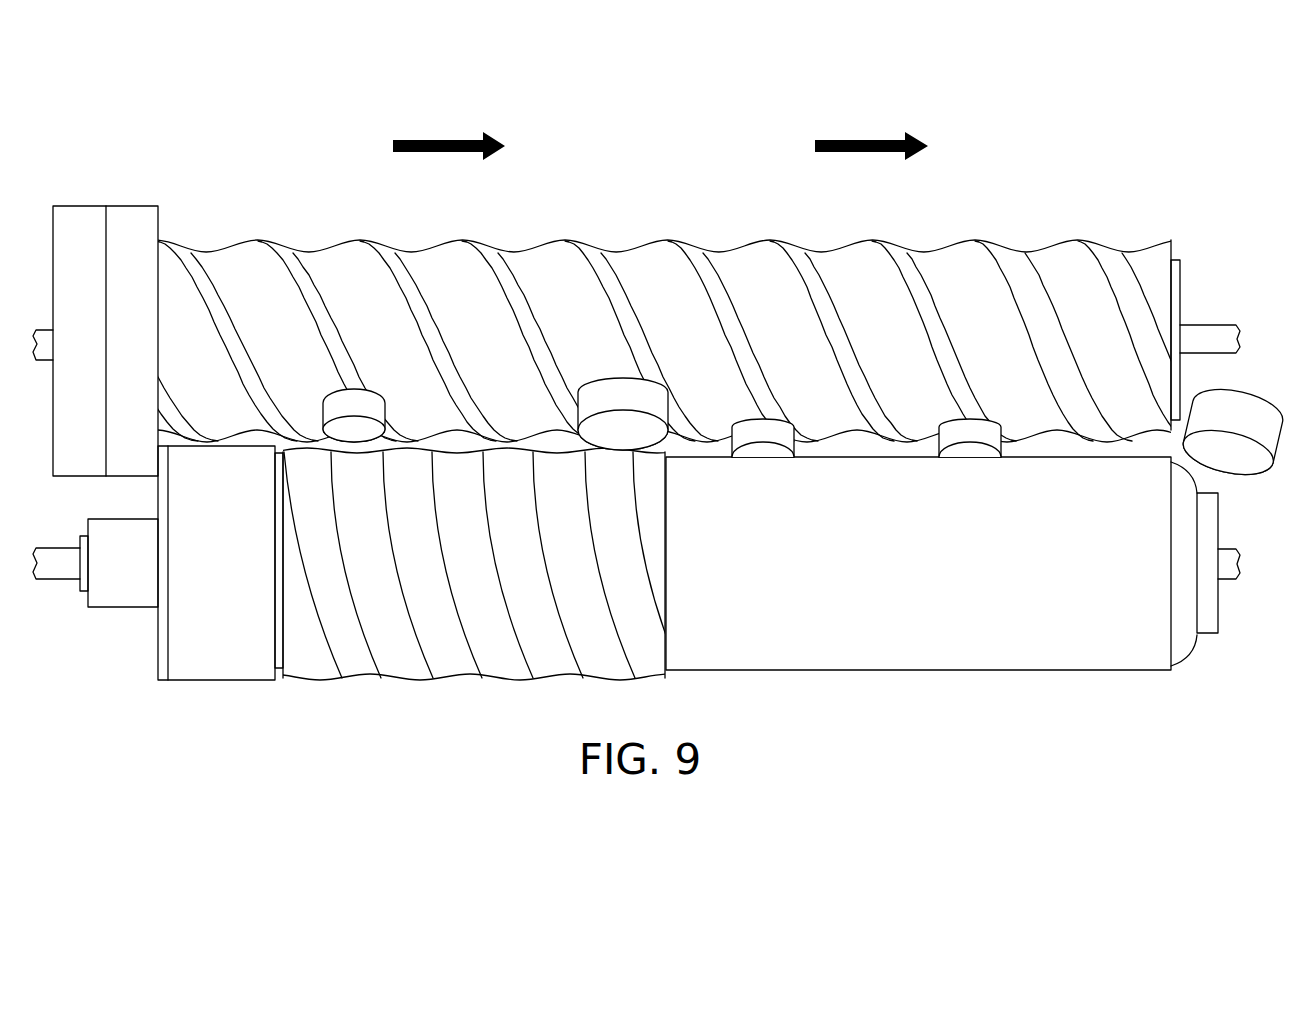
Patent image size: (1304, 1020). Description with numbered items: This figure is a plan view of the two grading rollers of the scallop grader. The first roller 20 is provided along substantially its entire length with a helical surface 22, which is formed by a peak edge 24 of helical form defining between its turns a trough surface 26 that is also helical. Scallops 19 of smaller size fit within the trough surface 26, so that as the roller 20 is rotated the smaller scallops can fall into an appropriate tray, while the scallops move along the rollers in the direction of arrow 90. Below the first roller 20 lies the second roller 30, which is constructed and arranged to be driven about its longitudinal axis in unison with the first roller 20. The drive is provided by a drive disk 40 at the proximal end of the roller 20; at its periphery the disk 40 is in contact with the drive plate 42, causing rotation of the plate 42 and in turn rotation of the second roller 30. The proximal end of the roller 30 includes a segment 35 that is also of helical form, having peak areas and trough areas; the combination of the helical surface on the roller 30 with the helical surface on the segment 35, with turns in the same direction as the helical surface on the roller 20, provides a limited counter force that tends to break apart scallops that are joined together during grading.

The scallops 19 is at (607, 385).
The first roller 20 is at (672, 297).
The helical surface 22 is at (590, 341).
The peak edge 24 is at (742, 341).
The trough surface 26 is at (726, 238).
The second roller 30 is at (885, 680).
The segment of roller 35 is at (510, 685).
The drive disk 40 is at (133, 217).
The drive plate 42 is at (157, 630).
The arrow 90 is at (435, 140).